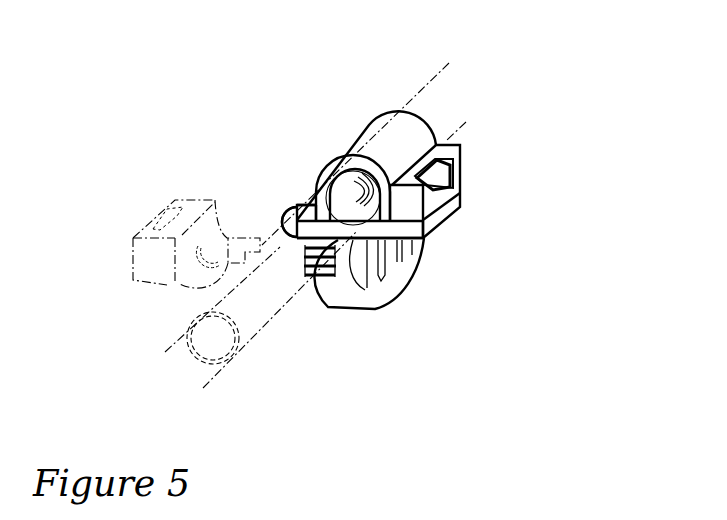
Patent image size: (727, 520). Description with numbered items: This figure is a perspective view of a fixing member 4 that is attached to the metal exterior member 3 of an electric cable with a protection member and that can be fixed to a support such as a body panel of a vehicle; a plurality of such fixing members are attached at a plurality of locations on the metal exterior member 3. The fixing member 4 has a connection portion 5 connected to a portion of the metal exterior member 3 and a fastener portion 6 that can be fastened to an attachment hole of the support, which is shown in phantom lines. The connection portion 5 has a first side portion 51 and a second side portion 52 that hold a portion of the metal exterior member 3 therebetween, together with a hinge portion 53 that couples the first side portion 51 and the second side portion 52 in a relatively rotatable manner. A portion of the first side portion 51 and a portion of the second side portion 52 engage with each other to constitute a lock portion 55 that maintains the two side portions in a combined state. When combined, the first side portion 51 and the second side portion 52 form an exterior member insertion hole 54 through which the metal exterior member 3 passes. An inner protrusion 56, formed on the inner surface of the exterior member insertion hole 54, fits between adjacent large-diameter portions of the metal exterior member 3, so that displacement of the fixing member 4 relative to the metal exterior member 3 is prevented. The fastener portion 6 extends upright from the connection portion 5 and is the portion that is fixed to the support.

The metal exterior member 3 is at (258, 335).
The fixing member 4 is at (306, 90).
The connection portion 5 is at (517, 163).
The fastener portion 6 is at (318, 303).
The first side portion 51 is at (428, 242).
The second side portion 52 is at (458, 142).
The hinge portion 53 is at (318, 216).
The exterior member insertion hole 54 is at (297, 205).
The lock portion 55 is at (459, 185).
The inner protrusion 56 is at (352, 177).